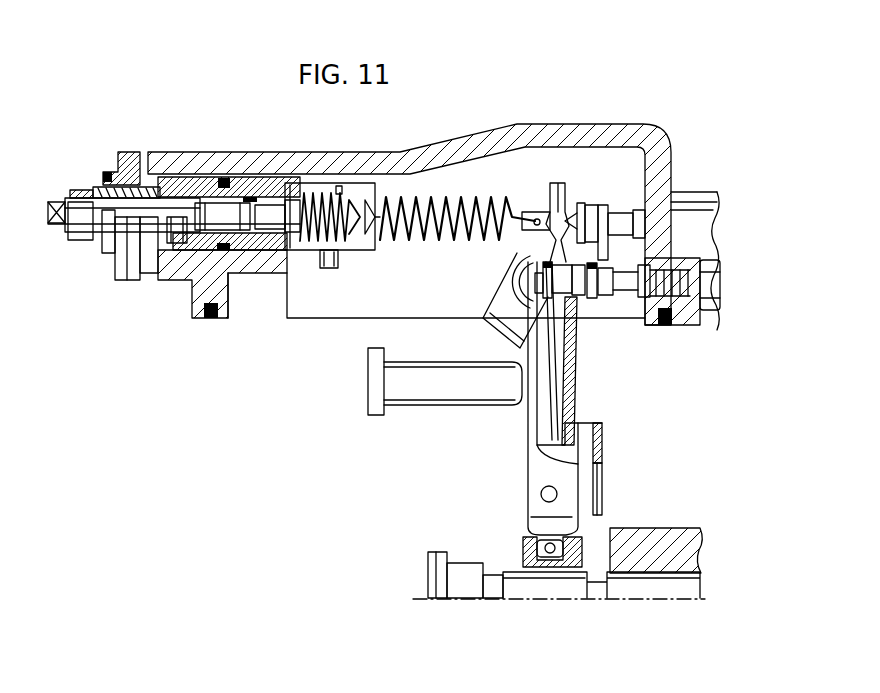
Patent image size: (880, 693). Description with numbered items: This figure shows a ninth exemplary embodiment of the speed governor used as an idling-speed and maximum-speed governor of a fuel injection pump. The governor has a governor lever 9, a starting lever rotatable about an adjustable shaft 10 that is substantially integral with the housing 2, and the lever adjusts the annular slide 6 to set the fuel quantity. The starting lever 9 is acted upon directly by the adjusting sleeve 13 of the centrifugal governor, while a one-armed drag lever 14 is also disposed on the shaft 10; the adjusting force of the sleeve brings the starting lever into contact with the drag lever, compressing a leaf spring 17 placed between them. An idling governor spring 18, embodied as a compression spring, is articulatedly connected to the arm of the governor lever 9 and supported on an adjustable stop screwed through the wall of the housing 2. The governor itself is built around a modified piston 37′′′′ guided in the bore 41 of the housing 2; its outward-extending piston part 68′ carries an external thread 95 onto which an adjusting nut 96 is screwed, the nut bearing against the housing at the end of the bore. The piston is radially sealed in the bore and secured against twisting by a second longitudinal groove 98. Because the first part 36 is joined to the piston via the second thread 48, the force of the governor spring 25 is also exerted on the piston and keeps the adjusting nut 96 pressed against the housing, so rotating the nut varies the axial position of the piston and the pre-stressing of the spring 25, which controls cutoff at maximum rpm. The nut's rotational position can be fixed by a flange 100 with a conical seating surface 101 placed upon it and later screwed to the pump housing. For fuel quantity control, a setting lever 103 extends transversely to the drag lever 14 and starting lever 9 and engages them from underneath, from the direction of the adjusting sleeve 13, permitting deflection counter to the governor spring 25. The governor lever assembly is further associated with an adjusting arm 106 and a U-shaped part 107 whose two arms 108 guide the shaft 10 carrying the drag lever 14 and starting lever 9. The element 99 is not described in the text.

The housing 2 is at (478, 136).
The annular slide 6 is at (530, 548).
The governor lever 9 is at (528, 425).
The adjustable shaft 10 is at (540, 494).
The adjusting sleeve 13 is at (445, 381).
The drag lever 14 is at (575, 388).
The starting lever spring 17 is at (558, 358).
The idling governor spring 18 is at (600, 300).
The governor spring 25 is at (410, 242).
The first part 36 is at (340, 185).
The piston 37′′′′ is at (236, 152).
The bore 41 is at (226, 288).
The second thread 48 is at (181, 249).
The piston part 68′ is at (175, 185).
The external thread 95 is at (196, 186).
The adjusting nut 96 is at (101, 177).
The second longitudinal groove 98 is at (355, 252).
The nut 99 is at (327, 269).
The flange 100 is at (128, 154).
The conical seating surface 101 is at (112, 165).
The setting lever 103 is at (490, 308).
The adjusting arm 106 is at (590, 208).
The U-shaped part 107 is at (603, 447).
The arms 108 is at (603, 482).